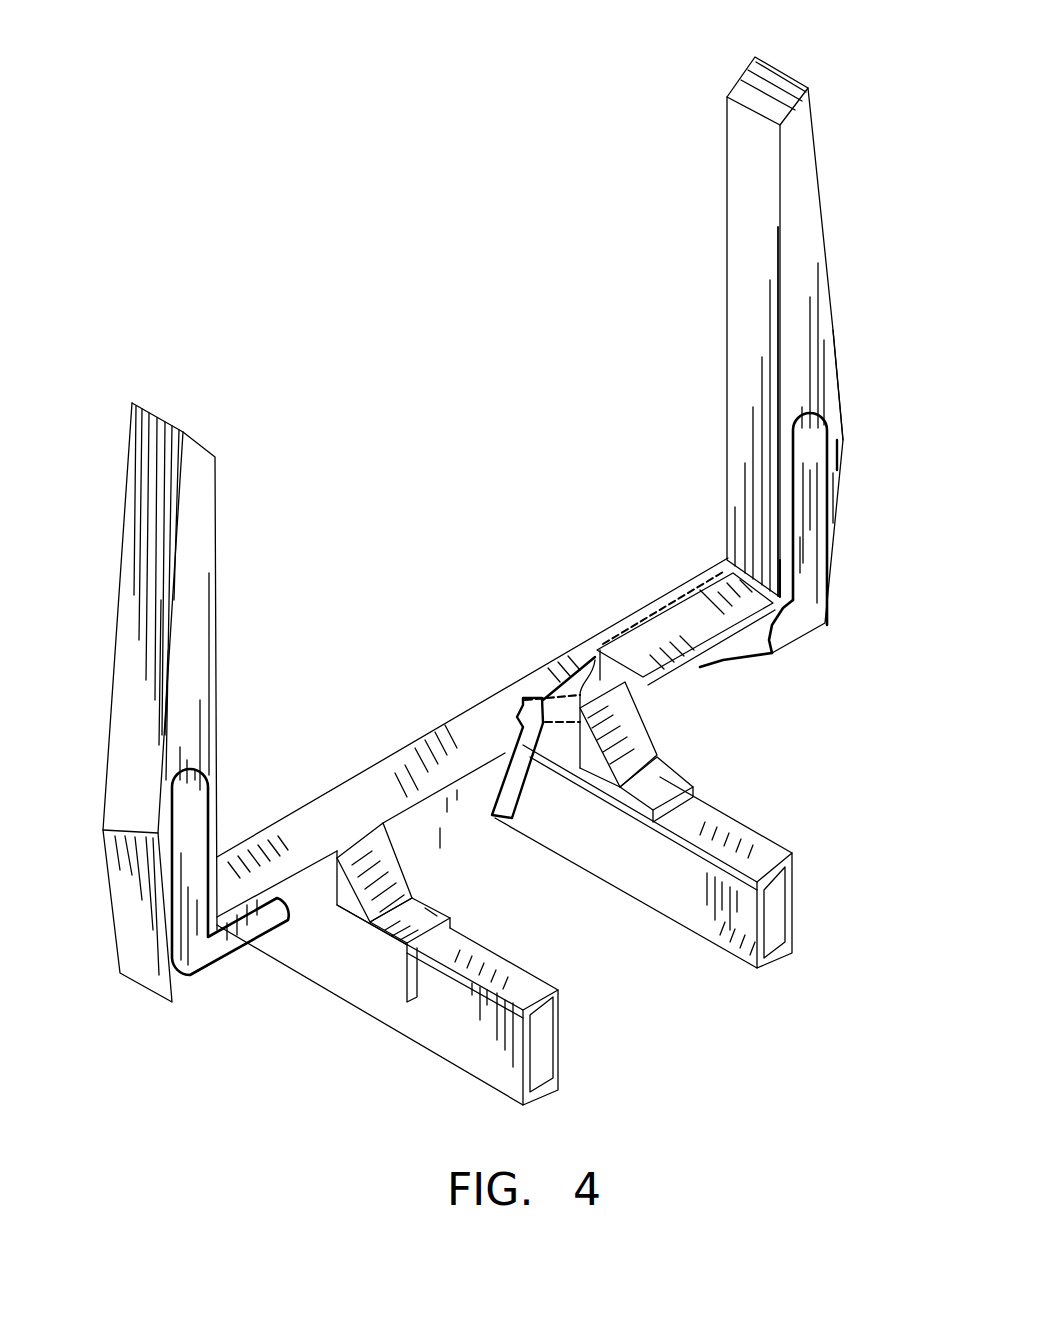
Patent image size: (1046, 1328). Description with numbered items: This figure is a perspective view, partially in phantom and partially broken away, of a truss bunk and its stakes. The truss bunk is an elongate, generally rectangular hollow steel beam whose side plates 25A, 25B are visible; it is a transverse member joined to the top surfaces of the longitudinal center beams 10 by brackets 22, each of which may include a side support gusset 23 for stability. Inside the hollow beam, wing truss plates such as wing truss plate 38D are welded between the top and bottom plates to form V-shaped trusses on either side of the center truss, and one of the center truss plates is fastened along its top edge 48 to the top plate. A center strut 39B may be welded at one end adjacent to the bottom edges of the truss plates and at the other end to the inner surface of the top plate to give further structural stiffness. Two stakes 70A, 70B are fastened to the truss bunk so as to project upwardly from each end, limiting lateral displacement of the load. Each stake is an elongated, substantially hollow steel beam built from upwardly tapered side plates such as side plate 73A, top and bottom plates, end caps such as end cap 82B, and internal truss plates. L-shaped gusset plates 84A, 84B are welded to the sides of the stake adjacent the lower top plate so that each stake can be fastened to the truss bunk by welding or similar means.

The center beam 10 is at (762, 848).
The bracket 22 is at (377, 852).
The side support gusset 23 is at (422, 912).
The side plate 25A is at (315, 905).
The side plate 25B is at (672, 622).
The wing truss plate 38D is at (683, 652).
The center strut 39B is at (655, 717).
The top edge 48 is at (540, 700).
The stake 70A is at (116, 437).
The stake 70B is at (812, 108).
The side plate 73A is at (835, 331).
The end cap 82B is at (748, 80).
The L-shaped gusset plate 84A is at (205, 952).
The L-shaped gusset plate 84B is at (817, 560).